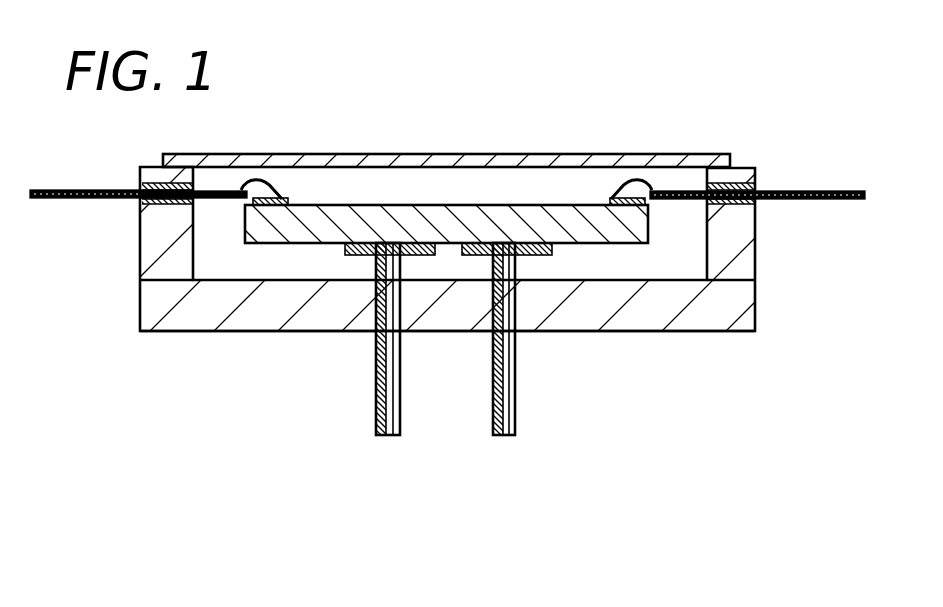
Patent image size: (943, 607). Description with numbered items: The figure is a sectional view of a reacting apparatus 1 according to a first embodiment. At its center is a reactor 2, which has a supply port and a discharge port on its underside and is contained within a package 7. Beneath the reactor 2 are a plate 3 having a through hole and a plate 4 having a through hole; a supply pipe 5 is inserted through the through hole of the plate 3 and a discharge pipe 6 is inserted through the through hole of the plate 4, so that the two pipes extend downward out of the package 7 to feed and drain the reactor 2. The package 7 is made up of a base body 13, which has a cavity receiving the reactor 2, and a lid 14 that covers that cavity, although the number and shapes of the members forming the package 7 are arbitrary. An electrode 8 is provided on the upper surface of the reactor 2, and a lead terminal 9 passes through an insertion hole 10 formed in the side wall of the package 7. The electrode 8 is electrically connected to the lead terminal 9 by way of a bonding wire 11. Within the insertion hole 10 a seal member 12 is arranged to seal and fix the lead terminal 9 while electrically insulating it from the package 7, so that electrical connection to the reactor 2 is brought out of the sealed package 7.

The reacting apparatus 1 is at (471, 303).
The reactor 2 is at (388, 205).
The plate 3 is at (337, 257).
The plate 4 is at (560, 257).
The supply pipe 5 is at (377, 400).
The discharge pipe 6 is at (514, 402).
The package 7 is at (471, 303).
The electrode 8 is at (620, 182).
The lead terminal 9 is at (815, 202).
The insertion hole 10 is at (753, 185).
The bonding wire 11 is at (247, 182).
The seal member 12 is at (757, 206).
The base body 13 is at (637, 333).
The lid 14 is at (651, 161).